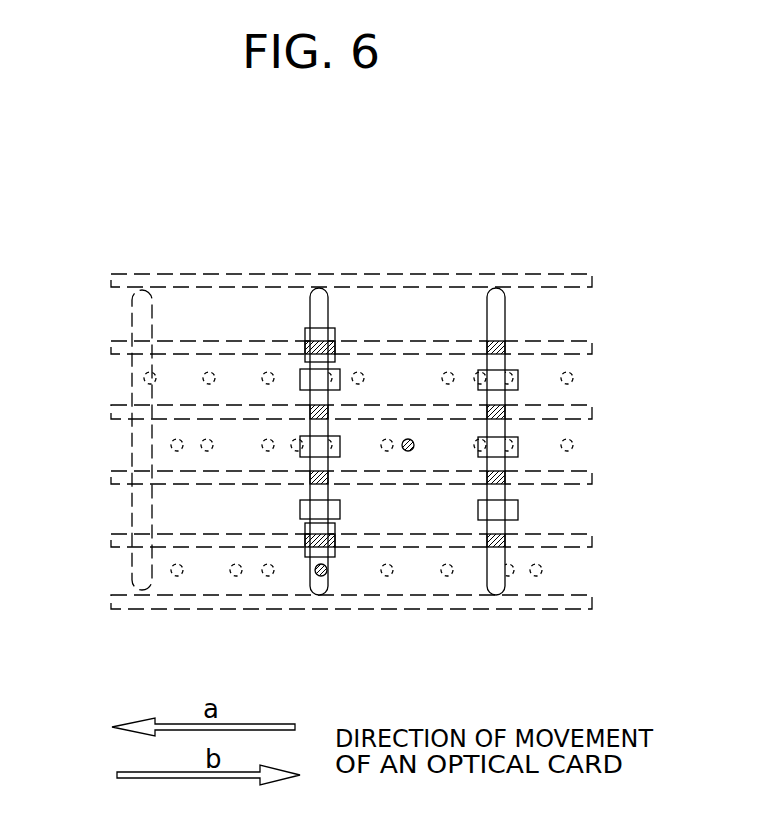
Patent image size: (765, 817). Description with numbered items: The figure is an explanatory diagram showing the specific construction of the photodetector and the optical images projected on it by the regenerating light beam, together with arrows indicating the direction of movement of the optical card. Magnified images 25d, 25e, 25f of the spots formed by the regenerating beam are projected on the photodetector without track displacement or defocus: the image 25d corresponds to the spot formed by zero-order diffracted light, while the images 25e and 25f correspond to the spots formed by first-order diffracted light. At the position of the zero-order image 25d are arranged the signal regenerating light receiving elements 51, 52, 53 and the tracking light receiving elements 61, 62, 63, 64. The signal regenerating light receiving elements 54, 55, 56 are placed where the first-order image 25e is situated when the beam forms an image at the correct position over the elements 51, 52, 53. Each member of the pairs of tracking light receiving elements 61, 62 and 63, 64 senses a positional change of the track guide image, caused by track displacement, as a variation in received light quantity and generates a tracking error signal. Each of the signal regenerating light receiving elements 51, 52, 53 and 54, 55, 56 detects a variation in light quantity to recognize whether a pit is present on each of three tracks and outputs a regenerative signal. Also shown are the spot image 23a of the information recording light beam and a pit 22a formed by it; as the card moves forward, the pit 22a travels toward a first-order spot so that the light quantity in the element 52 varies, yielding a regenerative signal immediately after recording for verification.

The pit 22a is at (390, 432).
The spot image of information recording light beam 23a is at (411, 452).
The image of zero-order diffracted light spot 25d is at (306, 590).
The image of first-order diffracted light spot 25e is at (509, 592).
The image of first-order diffracted light spot 25f is at (132, 588).
The signal regenerating light receiving element 51 is at (300, 377).
The signal regenerating light receiving element 52 is at (300, 452).
The signal regenerating light receiving element 53 is at (300, 506).
The signal regenerating light receiving element 54 is at (518, 377).
The signal regenerating light receiving element 55 is at (518, 447).
The signal regenerating light receiving element 56 is at (518, 510).
The tracking light receiving element 61 is at (305, 330).
The tracking light receiving element 62 is at (342, 352).
The tracking light receiving element 63 is at (335, 525).
The tracking light receiving element 64 is at (333, 556).